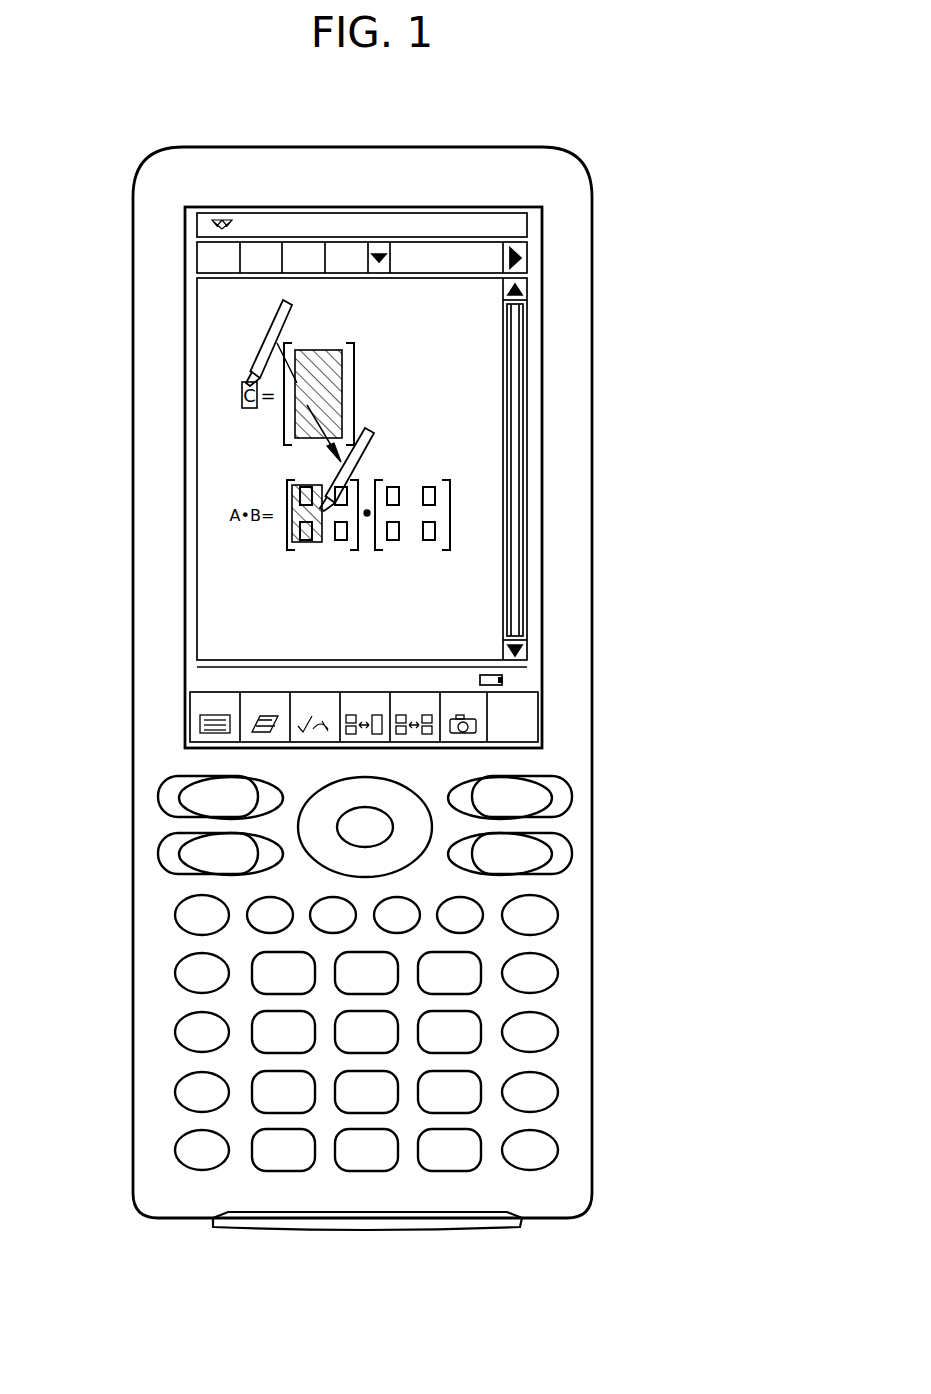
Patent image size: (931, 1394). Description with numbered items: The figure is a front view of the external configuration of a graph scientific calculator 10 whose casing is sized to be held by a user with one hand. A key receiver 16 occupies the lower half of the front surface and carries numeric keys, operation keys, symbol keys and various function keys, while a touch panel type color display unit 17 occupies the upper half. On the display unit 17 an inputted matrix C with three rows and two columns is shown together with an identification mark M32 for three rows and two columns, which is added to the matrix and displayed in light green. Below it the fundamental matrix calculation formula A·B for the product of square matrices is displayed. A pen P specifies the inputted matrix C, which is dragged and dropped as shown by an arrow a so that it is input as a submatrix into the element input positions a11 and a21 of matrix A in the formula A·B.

The graph scientific calculator 10 is at (157, 587).
The key receiver 16 is at (157, 1005).
The touch panel type color display unit 17 is at (190, 375).
The arrow a is at (235, 360).
The element input position a11 is at (290, 487).
The element input position a21 is at (292, 540).
The identification mark M32 is at (322, 350).
The pen P is at (283, 453).